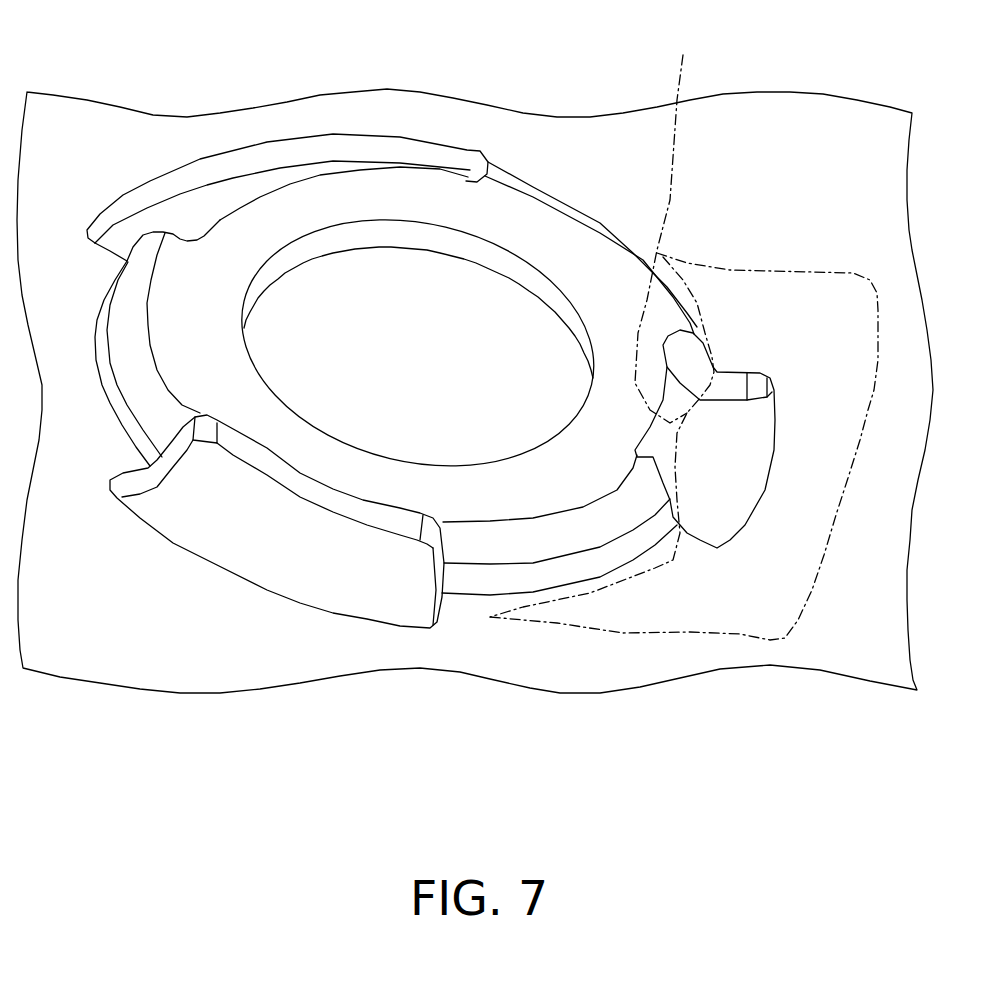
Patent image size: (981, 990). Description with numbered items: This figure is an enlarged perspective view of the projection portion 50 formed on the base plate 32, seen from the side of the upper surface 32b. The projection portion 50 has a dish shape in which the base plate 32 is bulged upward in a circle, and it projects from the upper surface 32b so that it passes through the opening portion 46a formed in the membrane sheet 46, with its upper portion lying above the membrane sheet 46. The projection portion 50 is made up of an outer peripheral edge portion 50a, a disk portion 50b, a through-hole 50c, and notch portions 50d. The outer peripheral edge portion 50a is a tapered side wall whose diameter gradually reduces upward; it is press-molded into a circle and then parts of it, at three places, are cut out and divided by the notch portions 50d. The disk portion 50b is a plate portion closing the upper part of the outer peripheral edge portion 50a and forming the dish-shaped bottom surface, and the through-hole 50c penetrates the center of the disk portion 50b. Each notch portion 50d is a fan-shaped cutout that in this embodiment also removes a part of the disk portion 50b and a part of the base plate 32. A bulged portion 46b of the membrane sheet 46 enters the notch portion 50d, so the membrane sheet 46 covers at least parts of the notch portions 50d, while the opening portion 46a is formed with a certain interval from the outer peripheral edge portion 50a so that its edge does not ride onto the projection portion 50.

The base plate 32 is at (475, 359).
The upper surface 32b is at (867, 85).
The membrane sheet 46 is at (684, 511).
The opening portion 46a is at (602, 513).
The bulged portion 46b is at (670, 224).
The projection portion 50 is at (456, 262).
The outer peripheral edge portion 50a is at (368, 397).
The disk portion 50b is at (373, 109).
The through-hole 50c is at (317, 54).
The notch portion 50d is at (222, 54).